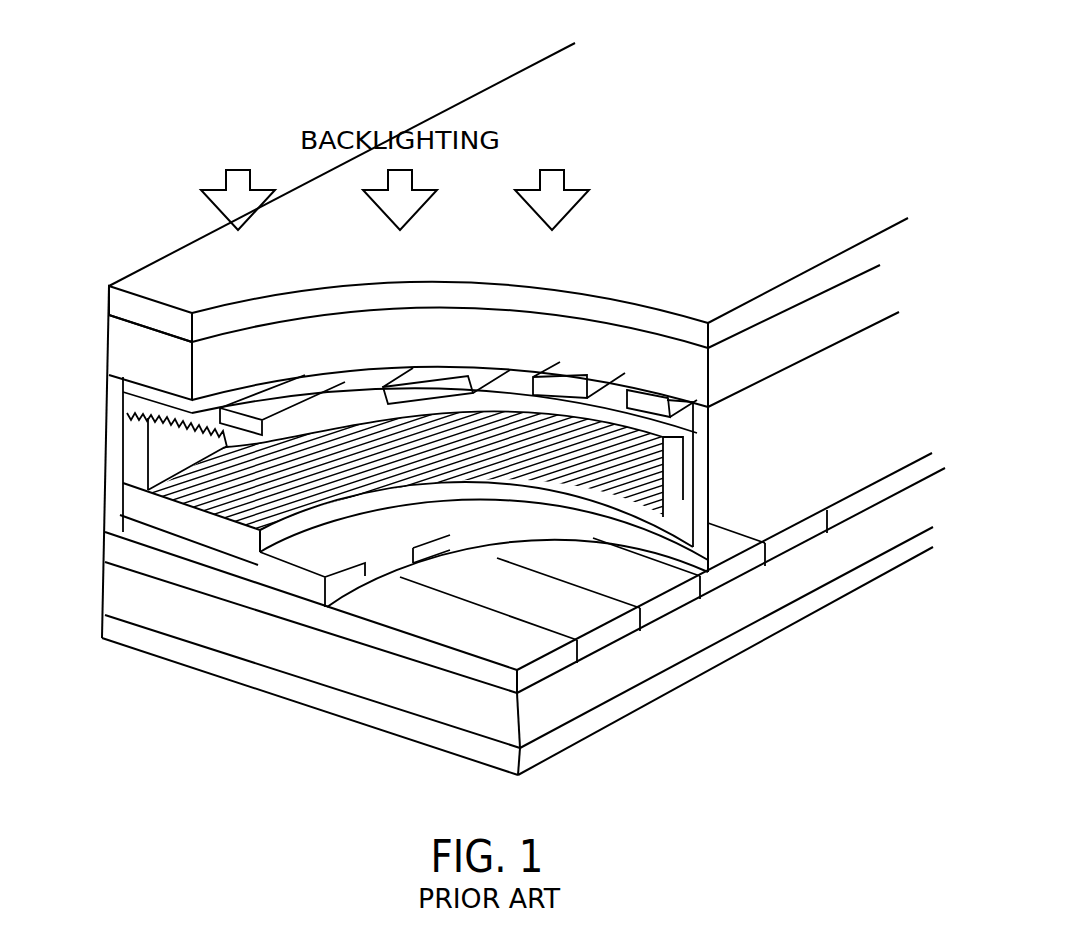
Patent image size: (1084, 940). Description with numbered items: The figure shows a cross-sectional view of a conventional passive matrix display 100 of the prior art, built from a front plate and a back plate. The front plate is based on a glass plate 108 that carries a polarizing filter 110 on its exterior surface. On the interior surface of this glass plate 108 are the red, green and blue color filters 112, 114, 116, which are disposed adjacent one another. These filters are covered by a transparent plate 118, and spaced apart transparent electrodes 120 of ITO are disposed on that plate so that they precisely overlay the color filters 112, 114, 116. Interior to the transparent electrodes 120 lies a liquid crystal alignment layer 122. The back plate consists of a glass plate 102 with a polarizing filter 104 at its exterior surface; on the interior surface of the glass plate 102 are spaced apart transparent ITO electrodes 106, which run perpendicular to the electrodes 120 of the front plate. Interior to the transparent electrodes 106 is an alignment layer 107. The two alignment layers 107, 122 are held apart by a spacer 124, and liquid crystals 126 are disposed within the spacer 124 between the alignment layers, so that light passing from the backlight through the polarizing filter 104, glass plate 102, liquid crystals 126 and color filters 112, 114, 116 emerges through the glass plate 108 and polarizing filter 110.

The conventional passive matrix display 100 is at (731, 63).
The glass plate 102 is at (793, 337).
The polarizing filter 104 is at (630, 317).
The transparent electrodes 106 is at (555, 383).
The alignment layer 107 is at (677, 433).
The glass plate 108 is at (420, 683).
The polarizing filter 110 is at (598, 730).
The color filter 112 is at (497, 673).
The color filter 114 is at (597, 640).
The color filter 116 is at (682, 595).
The transparent plate 118 is at (303, 597).
The transparent electrode 120 is at (258, 567).
The liquid crystal alignment layer 122 is at (177, 520).
The spacer 124 is at (137, 452).
The liquid crystals 126 is at (220, 518).